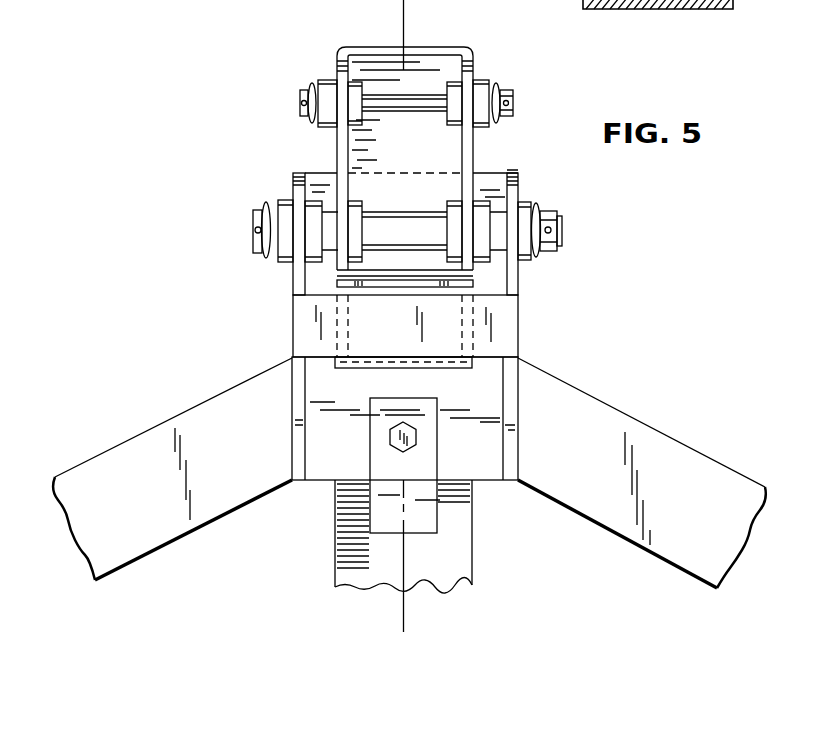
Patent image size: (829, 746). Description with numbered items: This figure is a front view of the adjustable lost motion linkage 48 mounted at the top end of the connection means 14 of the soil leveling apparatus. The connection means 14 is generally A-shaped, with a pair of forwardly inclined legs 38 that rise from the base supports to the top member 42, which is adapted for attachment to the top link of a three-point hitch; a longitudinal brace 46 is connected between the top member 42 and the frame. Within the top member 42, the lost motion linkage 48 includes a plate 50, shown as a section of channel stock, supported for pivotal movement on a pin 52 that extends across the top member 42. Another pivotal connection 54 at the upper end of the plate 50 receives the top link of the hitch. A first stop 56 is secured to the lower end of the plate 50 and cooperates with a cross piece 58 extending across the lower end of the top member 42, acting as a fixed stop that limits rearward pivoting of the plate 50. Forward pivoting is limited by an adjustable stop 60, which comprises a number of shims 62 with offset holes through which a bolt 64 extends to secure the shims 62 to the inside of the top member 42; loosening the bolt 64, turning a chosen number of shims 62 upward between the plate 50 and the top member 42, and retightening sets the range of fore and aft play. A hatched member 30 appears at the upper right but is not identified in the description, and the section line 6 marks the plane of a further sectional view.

The section line 6- 6 is at (415, 17).
The connection means 14 is at (523, 168).
The support plate 30 is at (655, 9).
The legs 38 is at (108, 460).
The top member 42 is at (293, 177).
The longitudinal brace 46 is at (347, 566).
The lost motion linkage 48 is at (423, 147).
The plate 50 is at (352, 46).
The pin 52 is at (253, 234).
The pivotal connection 54 is at (298, 103).
The first stop 56 is at (404, 281).
The cross piece 58 is at (305, 325).
The adjustable stop 60 is at (360, 519).
The shims 62 is at (381, 486).
The bolt 64 is at (390, 442).